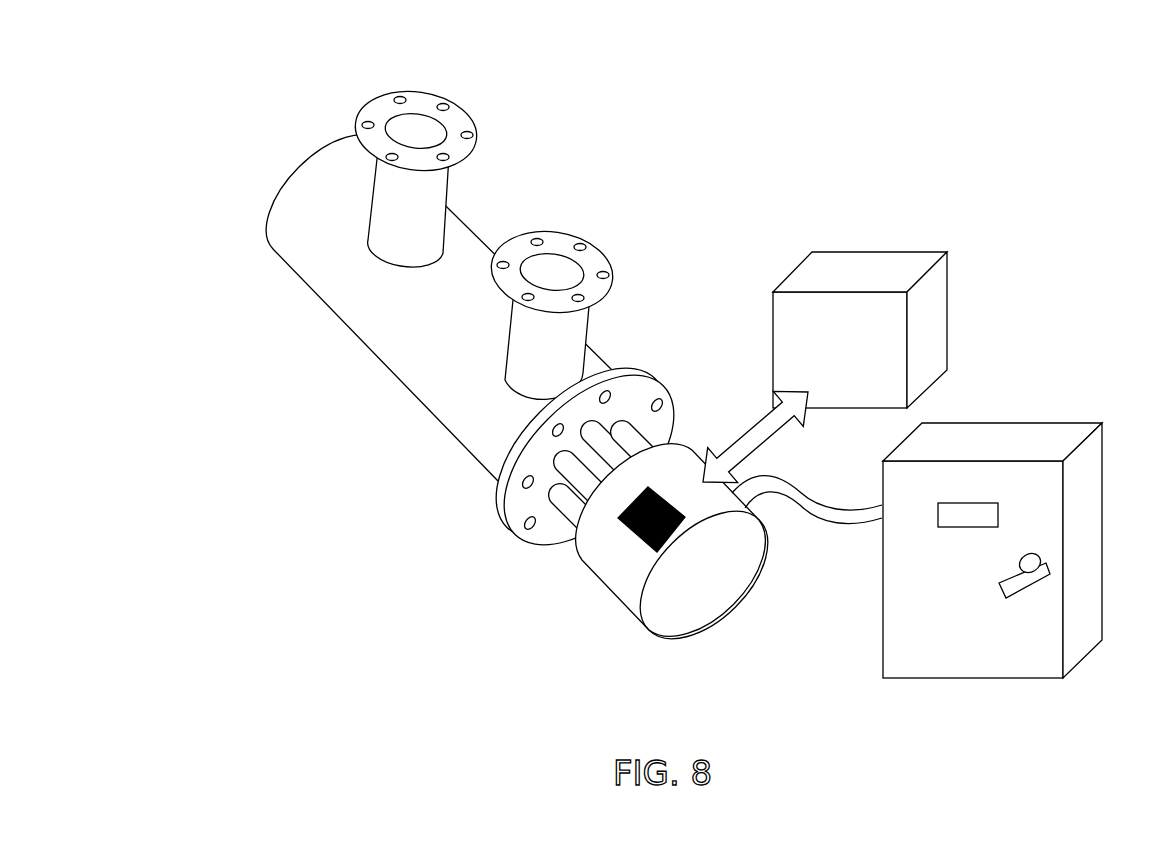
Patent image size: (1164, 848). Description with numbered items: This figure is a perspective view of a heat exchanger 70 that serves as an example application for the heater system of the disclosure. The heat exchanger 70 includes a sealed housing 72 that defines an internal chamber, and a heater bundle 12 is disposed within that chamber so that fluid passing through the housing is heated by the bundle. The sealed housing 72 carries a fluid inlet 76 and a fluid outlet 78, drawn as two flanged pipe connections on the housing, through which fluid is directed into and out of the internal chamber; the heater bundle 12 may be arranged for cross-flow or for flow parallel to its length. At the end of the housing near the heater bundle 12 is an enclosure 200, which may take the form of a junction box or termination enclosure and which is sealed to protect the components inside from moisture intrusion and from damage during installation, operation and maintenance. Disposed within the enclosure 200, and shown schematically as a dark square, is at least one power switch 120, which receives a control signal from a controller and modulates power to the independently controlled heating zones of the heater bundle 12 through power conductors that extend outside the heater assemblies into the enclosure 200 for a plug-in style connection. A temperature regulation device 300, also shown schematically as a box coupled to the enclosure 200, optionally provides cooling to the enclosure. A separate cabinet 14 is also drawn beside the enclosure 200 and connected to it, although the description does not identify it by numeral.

The heat exchanger 70 is at (467, 300).
The sealed housing 72 is at (301, 157).
The fluid inlet 76 is at (465, 97).
The fluid outlet 78 is at (590, 232).
The heater bundle 12 is at (545, 505).
The enclosure 200 is at (717, 605).
The power switch 120 is at (643, 537).
The temperature regulation device 300 is at (882, 262).
The control cabinet 14 is at (1080, 396).